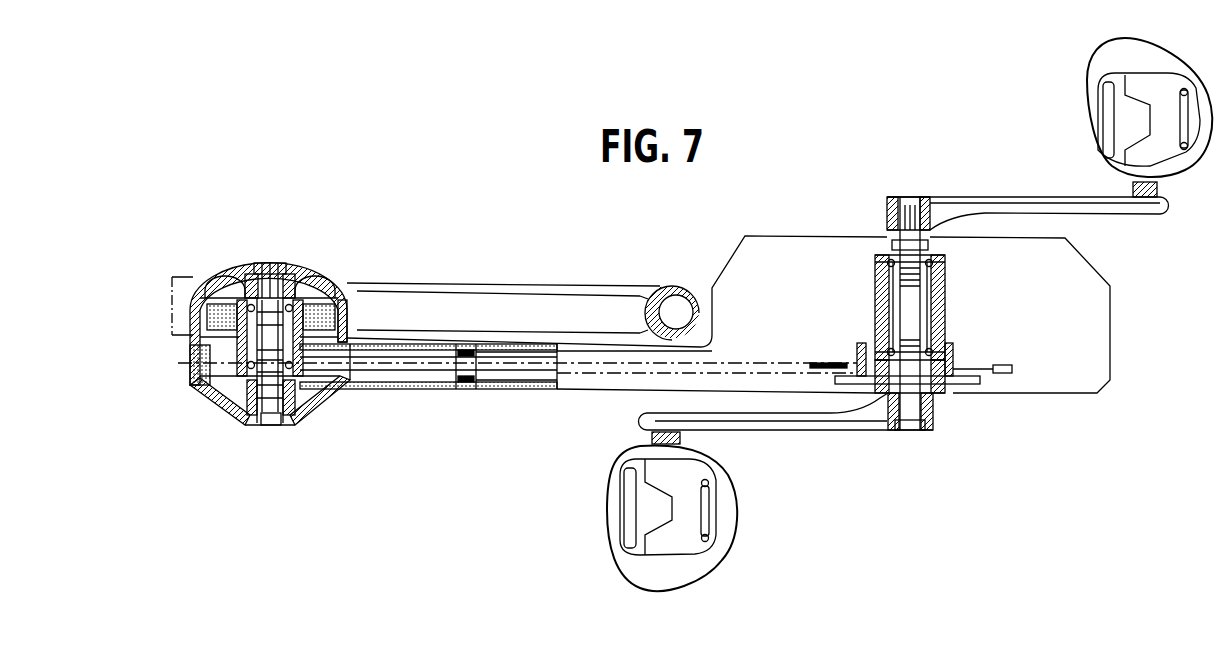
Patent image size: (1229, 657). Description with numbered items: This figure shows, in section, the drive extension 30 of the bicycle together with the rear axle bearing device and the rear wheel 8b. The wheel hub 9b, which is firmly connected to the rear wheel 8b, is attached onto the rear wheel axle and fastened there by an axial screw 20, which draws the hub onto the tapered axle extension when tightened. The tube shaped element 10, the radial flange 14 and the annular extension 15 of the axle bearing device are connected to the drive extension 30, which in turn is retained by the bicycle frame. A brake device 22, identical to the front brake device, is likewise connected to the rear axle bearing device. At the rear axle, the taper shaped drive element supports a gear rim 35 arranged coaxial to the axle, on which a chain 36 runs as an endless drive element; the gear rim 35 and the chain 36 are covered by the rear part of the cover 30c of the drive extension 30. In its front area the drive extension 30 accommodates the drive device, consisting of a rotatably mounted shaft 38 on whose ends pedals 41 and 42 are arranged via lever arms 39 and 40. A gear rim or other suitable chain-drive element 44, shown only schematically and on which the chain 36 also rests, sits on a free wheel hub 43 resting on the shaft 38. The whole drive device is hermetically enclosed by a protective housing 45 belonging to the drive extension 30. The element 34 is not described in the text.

The rear wheel 8b is at (512, 283).
The wheel hub 9b is at (303, 270).
The tube shaped element 10 is at (246, 340).
The radial flange 14 is at (348, 320).
The annular extension 15 is at (200, 357).
The axial screw 20 is at (268, 262).
The brake device 22 is at (343, 298).
The drive extension 30 is at (457, 350).
The cover 30c is at (512, 388).
The lock nut 34 is at (258, 426).
The gear rim 35 is at (316, 399).
The chain 36 is at (222, 398).
The shaft 38 is at (917, 313).
The lever arm 39 is at (1005, 197).
The lever arm 40 is at (791, 432).
The pedal 41 is at (1088, 108).
The pedal 42 is at (730, 512).
The free wheel hub 43 is at (935, 385).
The chain-drive element 44 is at (995, 378).
The protective housing 45 is at (823, 250).